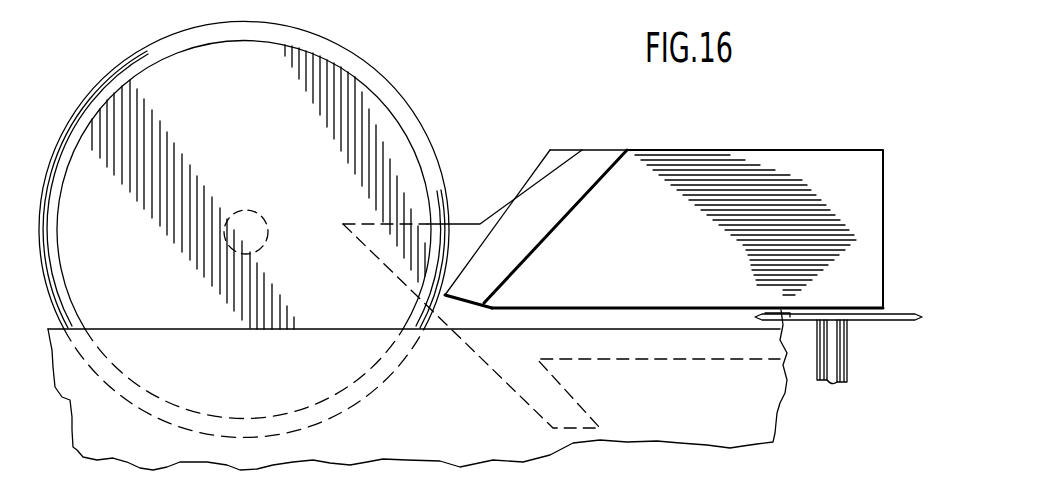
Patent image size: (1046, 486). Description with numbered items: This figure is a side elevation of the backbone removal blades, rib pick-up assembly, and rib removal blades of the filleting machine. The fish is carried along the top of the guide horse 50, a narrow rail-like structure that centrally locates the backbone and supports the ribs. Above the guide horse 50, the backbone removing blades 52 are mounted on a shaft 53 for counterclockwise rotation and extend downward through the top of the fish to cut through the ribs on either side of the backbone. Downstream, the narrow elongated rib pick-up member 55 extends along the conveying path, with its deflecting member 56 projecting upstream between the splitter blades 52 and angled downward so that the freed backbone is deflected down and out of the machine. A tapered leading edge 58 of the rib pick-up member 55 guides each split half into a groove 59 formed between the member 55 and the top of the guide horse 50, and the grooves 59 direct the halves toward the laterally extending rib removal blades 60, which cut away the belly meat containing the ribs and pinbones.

The guide horse 50 is at (435, 437).
The backbone removing blades 52 is at (256, 128).
The shaft 53 is at (262, 208).
The rib pick-up member 55 is at (558, 150).
The deflecting member 56 is at (477, 357).
The leading edge 58 is at (476, 296).
The grooves 59 is at (547, 320).
The rib removal blades 60 is at (876, 320).